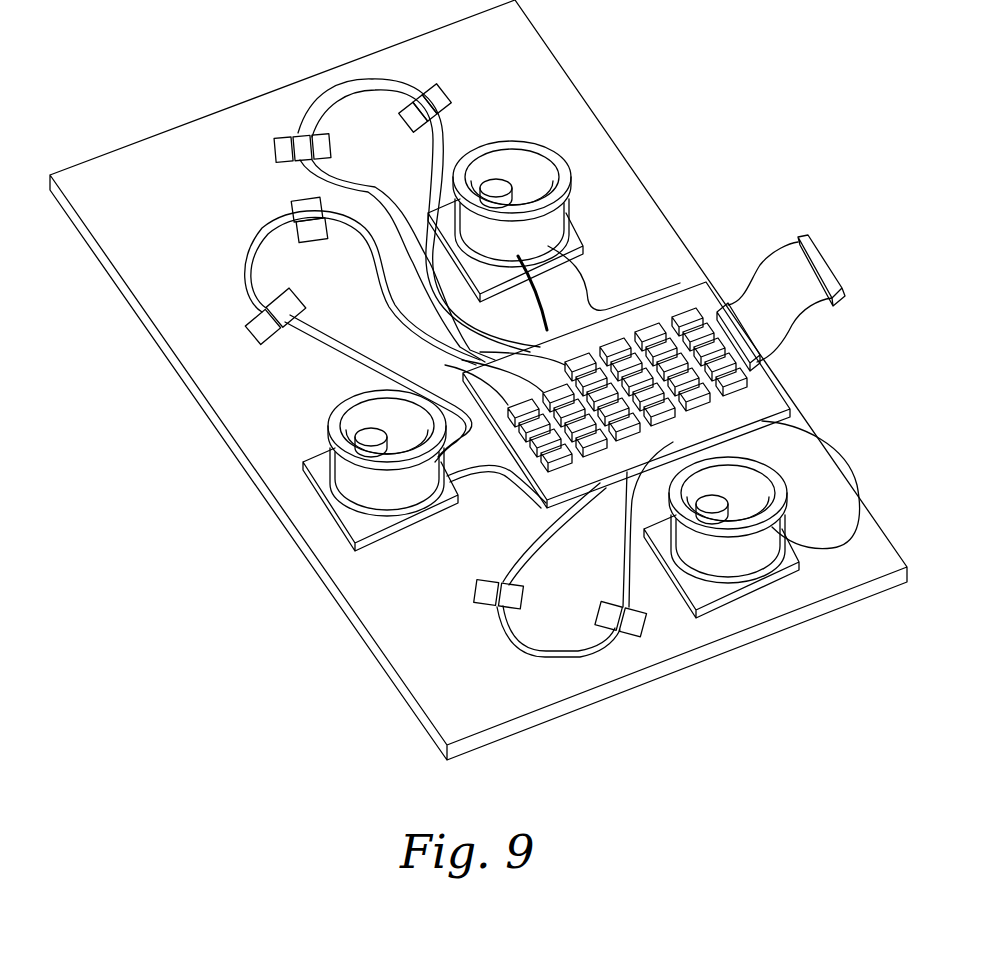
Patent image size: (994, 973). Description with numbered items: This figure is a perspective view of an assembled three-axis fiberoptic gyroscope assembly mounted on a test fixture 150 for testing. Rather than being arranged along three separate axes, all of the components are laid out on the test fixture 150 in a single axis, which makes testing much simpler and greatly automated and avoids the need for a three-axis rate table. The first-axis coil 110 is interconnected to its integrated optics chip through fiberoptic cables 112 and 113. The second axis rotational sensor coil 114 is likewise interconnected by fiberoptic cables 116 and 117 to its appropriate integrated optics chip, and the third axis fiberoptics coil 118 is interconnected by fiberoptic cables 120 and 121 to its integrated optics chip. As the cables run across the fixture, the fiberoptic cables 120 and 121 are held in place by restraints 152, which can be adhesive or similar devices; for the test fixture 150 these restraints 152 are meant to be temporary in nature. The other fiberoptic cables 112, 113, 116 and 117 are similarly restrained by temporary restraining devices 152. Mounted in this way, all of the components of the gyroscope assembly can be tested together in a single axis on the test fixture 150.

The first-axis coil 110 is at (352, 487).
The fiberoptic cable 112 is at (257, 267).
The fiberoptic cable 113 is at (247, 265).
The second axis rotational sensor coil 114 is at (660, 212).
The fiberoptic cable 116 is at (385, 88).
The fiberoptic cable 117 is at (456, 137).
The third axis fiberoptics coil 118 is at (851, 483).
The fiberoptic cable 120 is at (548, 537).
The fiberoptic cable 121 is at (520, 545).
The test fixture 150 is at (387, 670).
The restraints 152 is at (270, 144).